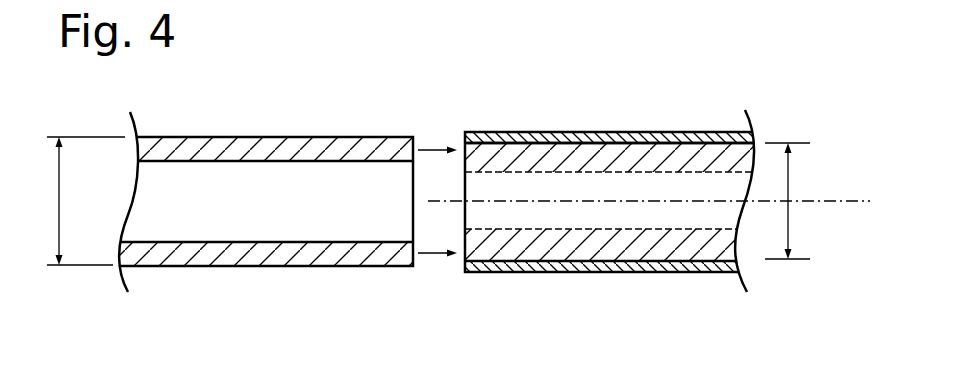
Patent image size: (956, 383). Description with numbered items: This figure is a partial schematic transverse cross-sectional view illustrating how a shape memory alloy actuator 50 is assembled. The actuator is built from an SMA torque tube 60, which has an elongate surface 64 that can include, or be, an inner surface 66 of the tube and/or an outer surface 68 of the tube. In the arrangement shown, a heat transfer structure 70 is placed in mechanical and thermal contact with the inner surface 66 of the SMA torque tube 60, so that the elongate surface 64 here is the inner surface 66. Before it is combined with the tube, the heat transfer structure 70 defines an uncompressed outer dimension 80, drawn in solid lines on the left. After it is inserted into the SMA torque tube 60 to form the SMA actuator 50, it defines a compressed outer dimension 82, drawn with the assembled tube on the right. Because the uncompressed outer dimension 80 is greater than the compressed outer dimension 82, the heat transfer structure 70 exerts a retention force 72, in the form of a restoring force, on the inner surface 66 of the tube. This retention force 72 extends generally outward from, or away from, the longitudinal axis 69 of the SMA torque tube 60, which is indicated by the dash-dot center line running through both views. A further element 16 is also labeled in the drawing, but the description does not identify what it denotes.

The catheter 16 is at (758, 35).
The shape memory alloy actuator 50 is at (736, 75).
The SMA torque tube 60 is at (583, 112).
The elongate surface 64 is at (578, 154).
The inner surface 66 is at (670, 150).
The outer surface 68 is at (736, 143).
The longitudinal axis 69 is at (828, 204).
The heat transfer structure 70 is at (199, 130).
The retention force 72 is at (618, 240).
The uncompressed outer dimension 80 is at (60, 215).
The compressed outer dimension 82 is at (789, 191).